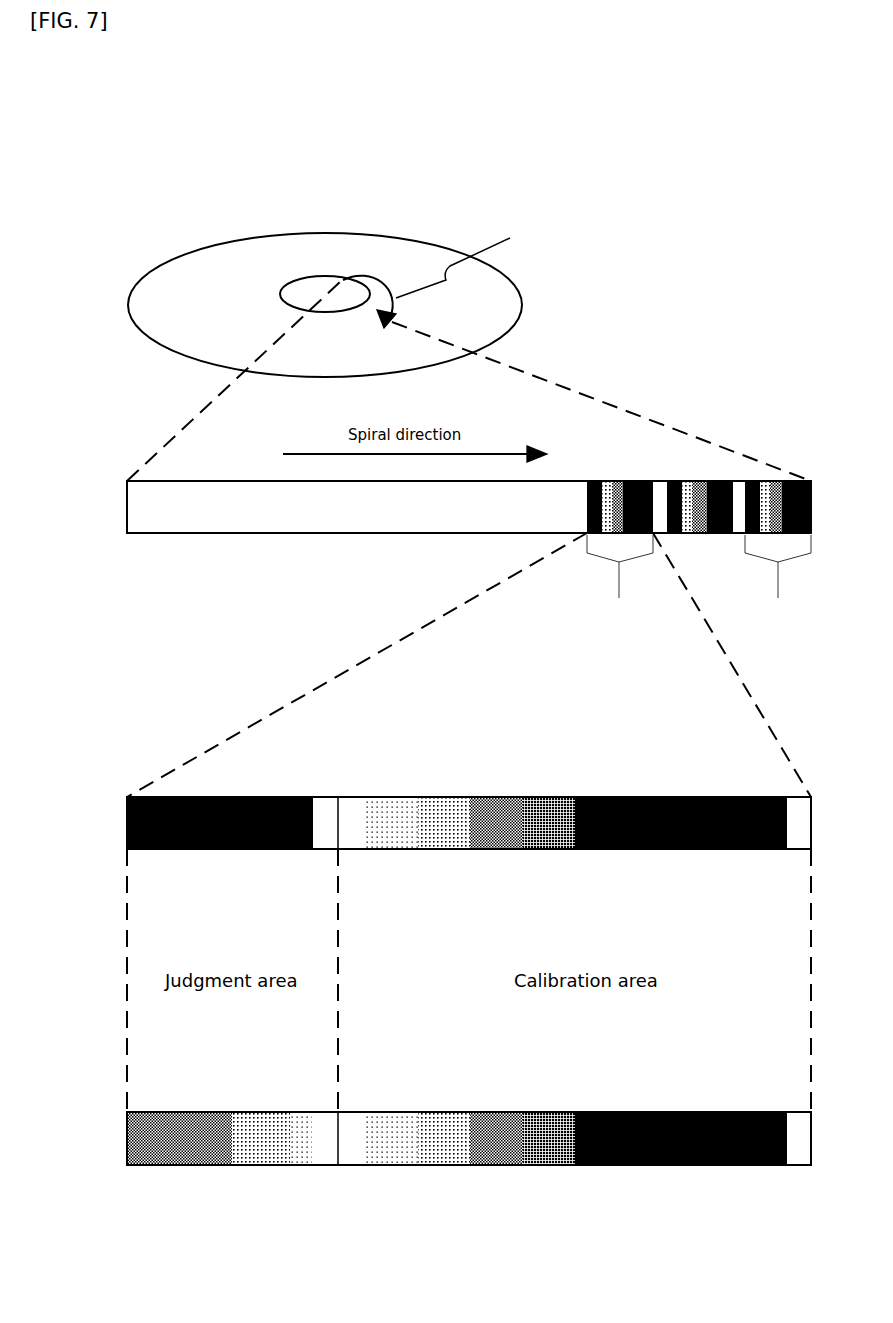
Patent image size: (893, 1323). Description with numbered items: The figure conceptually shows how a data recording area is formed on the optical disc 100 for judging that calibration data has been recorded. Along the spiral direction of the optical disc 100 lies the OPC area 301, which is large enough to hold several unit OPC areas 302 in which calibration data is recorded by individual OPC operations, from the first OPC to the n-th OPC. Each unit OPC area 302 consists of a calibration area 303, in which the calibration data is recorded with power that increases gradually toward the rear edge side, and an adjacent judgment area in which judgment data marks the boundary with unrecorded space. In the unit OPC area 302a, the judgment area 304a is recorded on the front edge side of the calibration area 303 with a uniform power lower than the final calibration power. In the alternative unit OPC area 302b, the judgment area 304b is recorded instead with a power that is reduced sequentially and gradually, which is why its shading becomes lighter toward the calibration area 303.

The optical disc 100 is at (323, 234).
The OPC area 301 is at (435, 508).
The unit OPC area 302 is at (630, 481).
The unit OPC area 302a is at (421, 963).
The unit OPC area 302b is at (421, 1121).
The calibration area 303 is at (548, 797).
The judgment area 304a is at (237, 797).
The judgment area 304b is at (237, 1112).